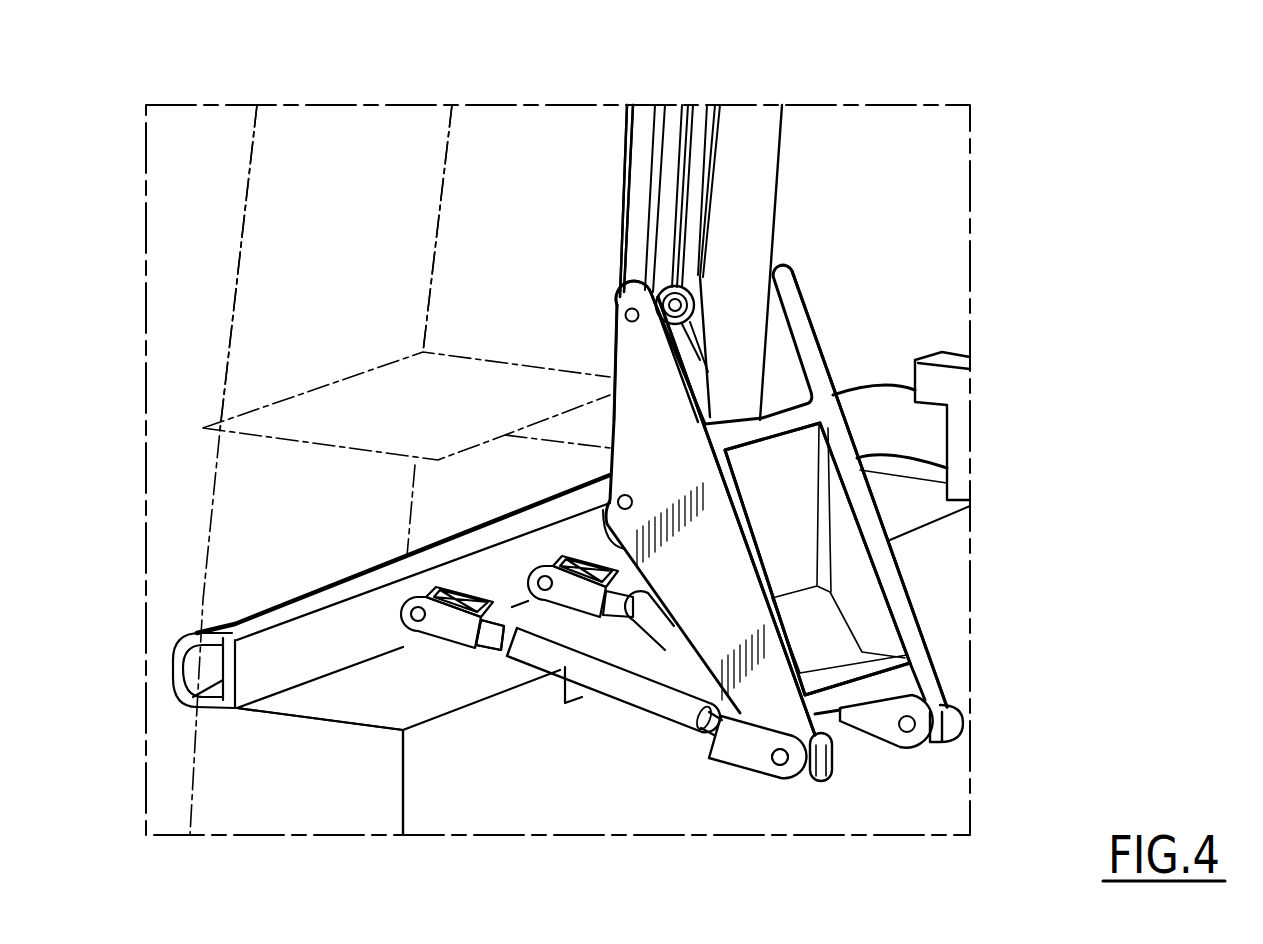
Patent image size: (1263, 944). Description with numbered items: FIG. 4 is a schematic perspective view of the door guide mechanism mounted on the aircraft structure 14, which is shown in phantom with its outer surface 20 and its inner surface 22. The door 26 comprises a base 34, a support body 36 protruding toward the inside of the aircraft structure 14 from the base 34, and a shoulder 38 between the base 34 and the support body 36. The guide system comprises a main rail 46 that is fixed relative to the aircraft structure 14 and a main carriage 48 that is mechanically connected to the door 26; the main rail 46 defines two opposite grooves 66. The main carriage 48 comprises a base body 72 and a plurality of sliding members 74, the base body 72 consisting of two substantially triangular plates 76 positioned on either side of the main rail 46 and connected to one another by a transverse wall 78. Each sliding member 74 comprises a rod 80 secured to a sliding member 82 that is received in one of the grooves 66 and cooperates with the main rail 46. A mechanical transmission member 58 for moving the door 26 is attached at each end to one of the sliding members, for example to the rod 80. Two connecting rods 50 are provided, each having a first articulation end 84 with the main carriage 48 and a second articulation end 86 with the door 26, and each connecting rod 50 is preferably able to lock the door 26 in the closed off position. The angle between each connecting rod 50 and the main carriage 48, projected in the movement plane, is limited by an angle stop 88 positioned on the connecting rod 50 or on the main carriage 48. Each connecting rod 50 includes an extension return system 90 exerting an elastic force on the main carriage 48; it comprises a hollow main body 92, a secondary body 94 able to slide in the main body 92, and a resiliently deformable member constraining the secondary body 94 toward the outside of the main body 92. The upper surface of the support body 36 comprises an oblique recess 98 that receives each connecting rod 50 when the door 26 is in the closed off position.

The aircraft structure 14 is at (323, 93).
The outer surface 20 is at (232, 232).
The inner surface 22 is at (365, 145).
The door 26 is at (263, 620).
The base 34 is at (300, 605).
The support body 36 is at (555, 830).
The shoulder 38 is at (247, 718).
The main rail 46 is at (758, 102).
The main carriage 48 is at (920, 603).
The connecting rod 50 is at (668, 735).
The mechanical transmission member 58 is at (625, 163).
The grooves 66 is at (697, 147).
The base body 72 is at (880, 513).
The sliding member 74 is at (693, 347).
The plates 76 is at (750, 563).
The transverse wall 78 is at (767, 443).
The rod 80 is at (672, 322).
The sliding member 82 is at (687, 288).
The first articulation end 84 is at (940, 755).
The second articulation end 86 is at (425, 650).
The angle stop 88 is at (957, 740).
The extension return system 90 is at (626, 706).
The hollow main body 92 is at (675, 658).
The secondary body 94 is at (500, 640).
The oblique recess 98 is at (563, 700).